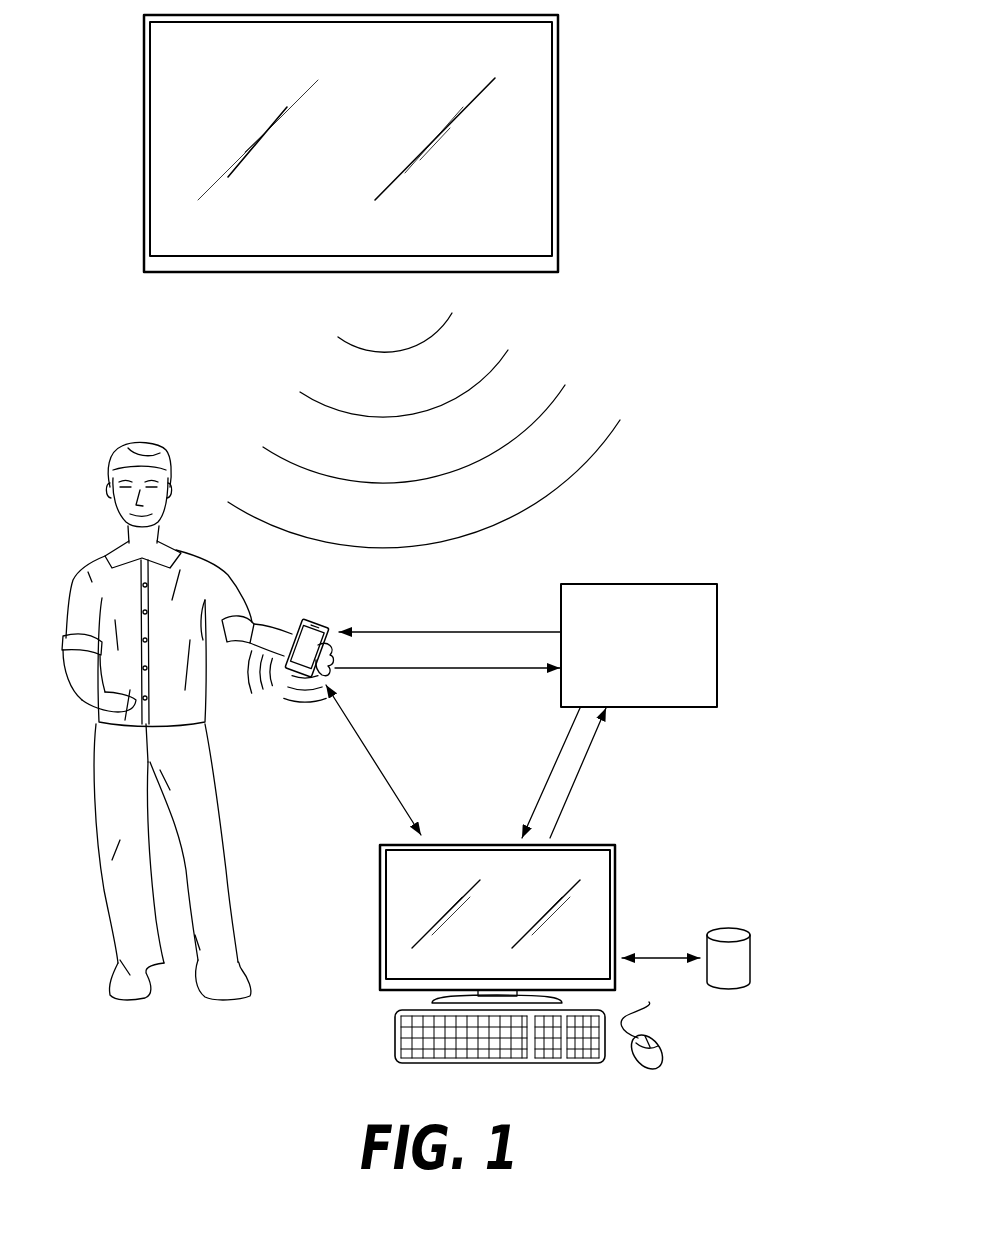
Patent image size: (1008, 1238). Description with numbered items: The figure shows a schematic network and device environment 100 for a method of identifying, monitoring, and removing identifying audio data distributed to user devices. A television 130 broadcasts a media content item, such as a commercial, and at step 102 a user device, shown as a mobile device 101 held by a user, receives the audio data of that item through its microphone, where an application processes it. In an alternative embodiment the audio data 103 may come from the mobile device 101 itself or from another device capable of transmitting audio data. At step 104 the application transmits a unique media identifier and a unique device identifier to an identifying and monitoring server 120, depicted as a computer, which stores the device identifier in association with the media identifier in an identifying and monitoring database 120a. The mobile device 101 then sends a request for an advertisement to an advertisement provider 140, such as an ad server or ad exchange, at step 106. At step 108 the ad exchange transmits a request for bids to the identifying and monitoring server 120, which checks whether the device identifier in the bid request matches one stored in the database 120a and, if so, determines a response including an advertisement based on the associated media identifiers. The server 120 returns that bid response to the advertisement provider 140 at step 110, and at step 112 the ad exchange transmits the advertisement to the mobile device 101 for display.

The network and device environment 100 is at (758, 54).
The television 130 is at (143, 132).
The step of receiving audio data 102 is at (553, 345).
The mobile device 101 is at (320, 620).
The audio data 103 is at (265, 715).
The step of transmitting identifiers 104 is at (373, 760).
The step of transmitting the advertisement 112 is at (463, 632).
The step of requesting an advertisement 106 is at (447, 669).
The advertisement provider 140 is at (717, 622).
The step of transmitting a request for bids 108 is at (548, 778).
The step of transmitting the bid response 110 is at (577, 778).
The identifying and monitoring server 120 is at (615, 915).
The identifying and monitoring database 120a is at (750, 965).